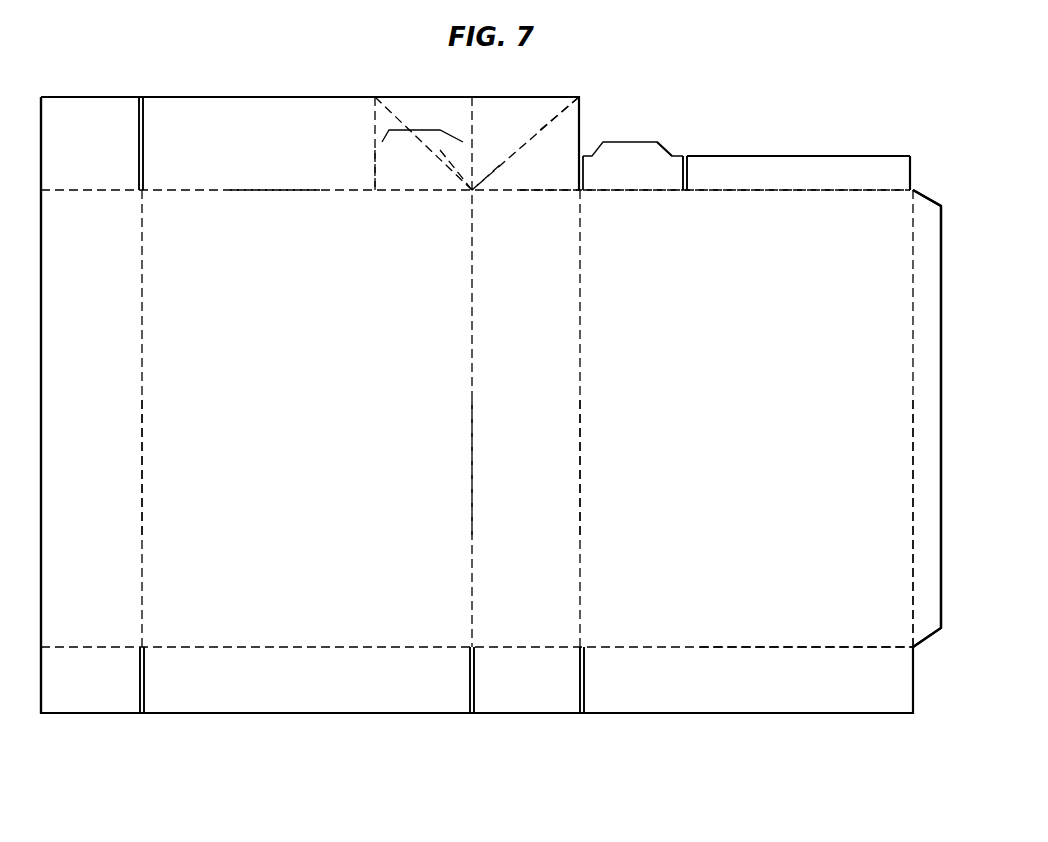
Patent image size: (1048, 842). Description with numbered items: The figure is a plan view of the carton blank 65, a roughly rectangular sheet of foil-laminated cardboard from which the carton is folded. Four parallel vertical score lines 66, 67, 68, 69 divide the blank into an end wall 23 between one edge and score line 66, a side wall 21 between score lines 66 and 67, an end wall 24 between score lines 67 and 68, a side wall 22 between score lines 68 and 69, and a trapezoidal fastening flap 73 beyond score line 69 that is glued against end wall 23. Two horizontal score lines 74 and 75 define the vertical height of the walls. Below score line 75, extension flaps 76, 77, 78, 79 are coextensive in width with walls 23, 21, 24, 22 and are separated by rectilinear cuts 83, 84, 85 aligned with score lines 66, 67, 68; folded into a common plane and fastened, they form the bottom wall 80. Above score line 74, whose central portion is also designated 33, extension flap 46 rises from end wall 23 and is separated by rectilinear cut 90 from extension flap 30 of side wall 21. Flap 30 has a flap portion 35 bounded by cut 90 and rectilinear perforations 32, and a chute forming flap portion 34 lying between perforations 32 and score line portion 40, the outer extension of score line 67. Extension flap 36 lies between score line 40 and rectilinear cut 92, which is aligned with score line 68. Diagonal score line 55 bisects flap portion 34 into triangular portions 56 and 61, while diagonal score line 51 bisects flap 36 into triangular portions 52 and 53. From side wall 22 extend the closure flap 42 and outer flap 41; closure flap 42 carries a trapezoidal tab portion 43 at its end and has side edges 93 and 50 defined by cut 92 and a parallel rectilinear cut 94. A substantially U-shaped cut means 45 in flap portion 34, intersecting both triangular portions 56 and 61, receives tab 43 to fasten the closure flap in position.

The side wall 21 is at (308, 401).
The side wall 22 is at (736, 401).
The end wall 23 is at (108, 401).
The end wall 24 is at (539, 401).
The extension flap 30 is at (328, 112).
The rectilinear perforations 32 is at (375, 166).
The score line portion 33 is at (265, 195).
The extension flap portion 34 is at (420, 108).
The extension flap portion 35 is at (256, 108).
The extension flap 36 is at (547, 109).
The score line portion 40 is at (478, 108).
The outer flap 41 is at (788, 160).
The closure flap 42 is at (645, 170).
The tab portion 43 is at (640, 142).
The U-shaped cut means 45 is at (440, 132).
The extension flap 46 is at (92, 108).
The side edge 50 is at (690, 172).
The diagonal score line 51 is at (528, 142).
The triangular portion 52 is at (497, 160).
The triangular portion 53 is at (551, 174).
The diagonal score line 55 is at (455, 178).
The triangular portion 56 is at (453, 108).
The triangular portion 61 is at (394, 180).
The carton blank 65 is at (986, 402).
The score line 66 is at (142, 472).
The score line 67 is at (472, 466).
The score line 68 is at (580, 468).
The score line 69 is at (913, 485).
The fastening flap 73 is at (929, 356).
The score line 74 is at (840, 191).
The score line 75 is at (780, 647).
The extension flap 76 is at (110, 698).
The extension flap 77 is at (330, 698).
The extension flap 78 is at (549, 698).
The extension flap 79 is at (759, 698).
The bottom wall 80 is at (493, 741).
The rectilinear cut 83 is at (142, 713).
The rectilinear cut 84 is at (472, 713).
The rectilinear cut 85 is at (582, 713).
The rectilinear cut 90 is at (143, 110).
The rectilinear cut 92 is at (583, 155).
The side edge 93 is at (588, 172).
The rectilinear cut 94 is at (688, 155).